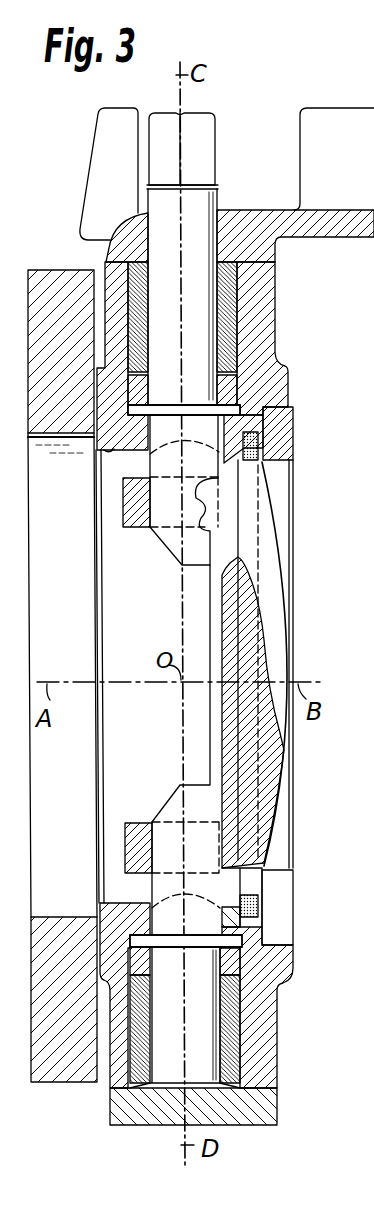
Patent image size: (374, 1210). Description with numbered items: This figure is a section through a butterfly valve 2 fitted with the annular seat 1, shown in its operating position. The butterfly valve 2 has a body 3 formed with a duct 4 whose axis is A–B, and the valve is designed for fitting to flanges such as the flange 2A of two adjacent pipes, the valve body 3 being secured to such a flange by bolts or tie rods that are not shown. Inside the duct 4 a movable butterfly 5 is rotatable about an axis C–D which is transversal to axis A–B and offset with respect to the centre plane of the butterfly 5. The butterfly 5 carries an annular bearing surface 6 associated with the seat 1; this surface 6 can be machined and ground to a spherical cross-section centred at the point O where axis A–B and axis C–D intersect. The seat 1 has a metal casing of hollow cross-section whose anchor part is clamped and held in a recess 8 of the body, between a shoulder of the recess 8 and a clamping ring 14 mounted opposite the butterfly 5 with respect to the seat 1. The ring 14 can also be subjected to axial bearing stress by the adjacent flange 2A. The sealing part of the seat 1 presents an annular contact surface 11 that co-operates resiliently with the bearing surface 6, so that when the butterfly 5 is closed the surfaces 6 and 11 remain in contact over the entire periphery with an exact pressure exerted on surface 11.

The annular seat 1 is at (252, 424).
The butterfly valve 2 is at (296, 308).
The flange 2A is at (50, 277).
The valve body 3 is at (270, 1017).
The duct 4 is at (108, 449).
The butterfly 5 is at (277, 599).
The annular bearing surface 6 is at (252, 540).
The recess 8 is at (257, 919).
The annular contact surface 11 is at (255, 881).
The clamping ring 14 is at (291, 439).